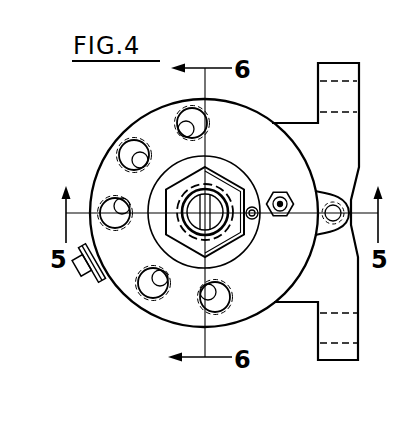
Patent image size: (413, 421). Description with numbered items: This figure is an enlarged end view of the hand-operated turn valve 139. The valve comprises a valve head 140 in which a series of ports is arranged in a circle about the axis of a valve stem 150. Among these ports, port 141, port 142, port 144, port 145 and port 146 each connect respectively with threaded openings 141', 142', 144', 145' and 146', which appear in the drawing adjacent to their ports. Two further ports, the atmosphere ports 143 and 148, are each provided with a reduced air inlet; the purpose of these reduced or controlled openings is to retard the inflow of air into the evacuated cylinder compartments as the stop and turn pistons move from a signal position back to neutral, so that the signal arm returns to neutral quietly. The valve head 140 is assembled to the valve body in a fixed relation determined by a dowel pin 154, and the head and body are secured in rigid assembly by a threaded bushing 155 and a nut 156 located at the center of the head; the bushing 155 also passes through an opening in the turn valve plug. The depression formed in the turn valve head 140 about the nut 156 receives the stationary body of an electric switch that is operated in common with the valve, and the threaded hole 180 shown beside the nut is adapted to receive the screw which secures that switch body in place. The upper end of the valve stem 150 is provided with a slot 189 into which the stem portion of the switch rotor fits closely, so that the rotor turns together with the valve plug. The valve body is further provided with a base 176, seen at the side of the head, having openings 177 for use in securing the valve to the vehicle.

The turn valve 139 is at (253, 303).
The valve head 140 is at (142, 128).
The port 141 is at (205, 295).
The threaded opening 141' is at (163, 319).
The port 142 is at (111, 289).
The threaded opening 142' is at (125, 305).
The atmosphere port 143 is at (73, 268).
The port 144 is at (115, 207).
The threaded opening 144' is at (92, 186).
The port 145 is at (104, 155).
The threaded opening 145' is at (105, 143).
The port 146 is at (176, 123).
The threaded opening 146' is at (168, 108).
The atmosphere port 148 is at (287, 192).
The valve stem 150 is at (181, 225).
The dowel pin 154 is at (333, 195).
The threaded bushing 155 is at (221, 193).
The nut 156 is at (211, 180).
The base 176 is at (340, 300).
The openings 177 is at (342, 93).
The threaded hole 180 is at (260, 222).
The slot 189 is at (221, 230).